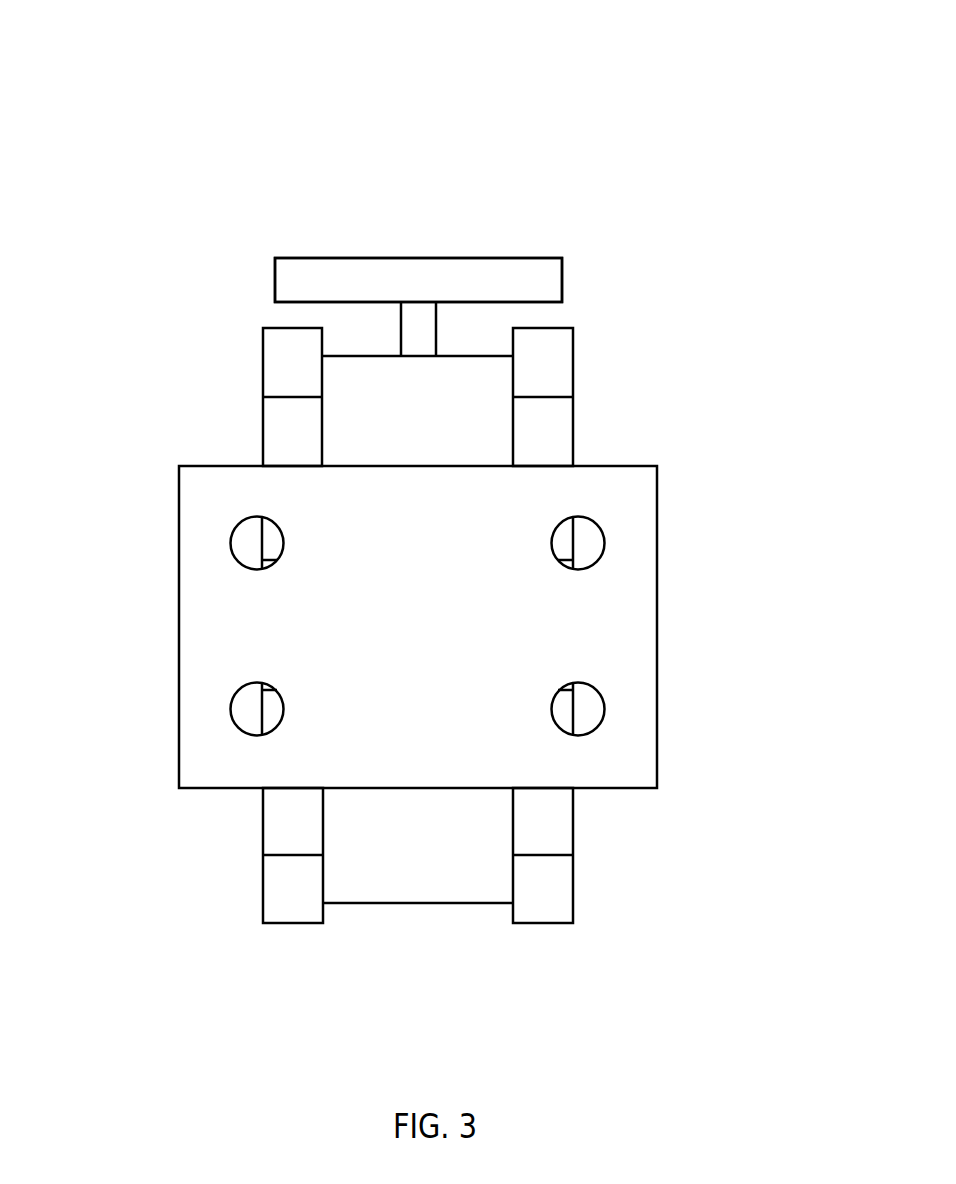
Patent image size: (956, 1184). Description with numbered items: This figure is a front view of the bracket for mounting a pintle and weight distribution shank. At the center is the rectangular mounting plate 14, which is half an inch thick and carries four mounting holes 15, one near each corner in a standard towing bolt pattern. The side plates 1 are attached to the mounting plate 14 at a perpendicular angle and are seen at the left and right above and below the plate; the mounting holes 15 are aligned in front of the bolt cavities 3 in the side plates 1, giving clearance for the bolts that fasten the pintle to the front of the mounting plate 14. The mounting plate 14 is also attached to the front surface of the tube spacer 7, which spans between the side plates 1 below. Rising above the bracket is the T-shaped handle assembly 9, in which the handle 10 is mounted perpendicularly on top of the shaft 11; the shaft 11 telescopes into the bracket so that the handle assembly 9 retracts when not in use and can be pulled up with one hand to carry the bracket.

The side plate 1 is at (288, 820).
The bolt cavity 3 is at (278, 709).
The tube spacer 7 is at (418, 857).
The handle assembly 9 is at (357, 224).
The handle 10 is at (490, 283).
The shaft 11 is at (417, 328).
The mounting plate 14 is at (233, 632).
The mounting hole 15 is at (245, 732).